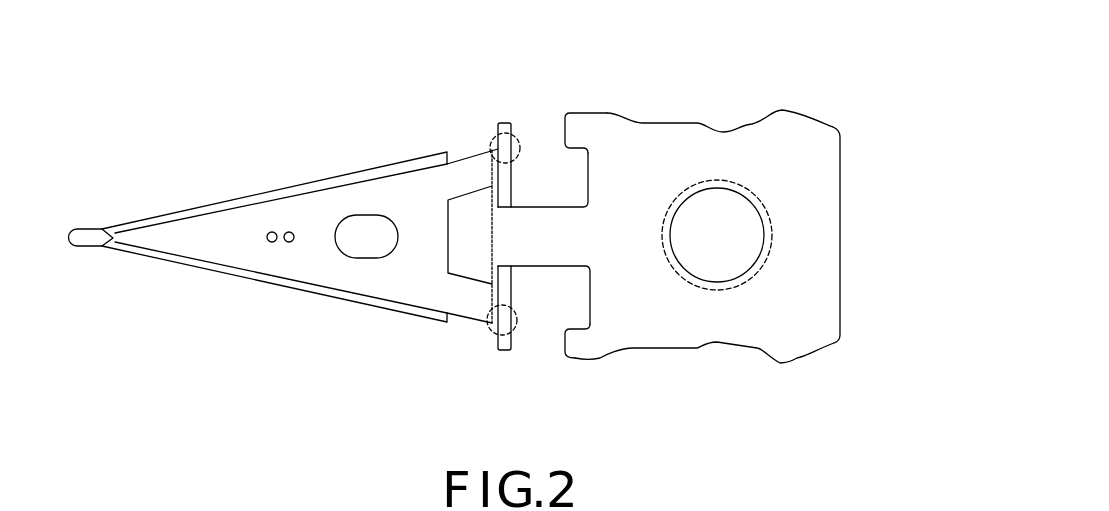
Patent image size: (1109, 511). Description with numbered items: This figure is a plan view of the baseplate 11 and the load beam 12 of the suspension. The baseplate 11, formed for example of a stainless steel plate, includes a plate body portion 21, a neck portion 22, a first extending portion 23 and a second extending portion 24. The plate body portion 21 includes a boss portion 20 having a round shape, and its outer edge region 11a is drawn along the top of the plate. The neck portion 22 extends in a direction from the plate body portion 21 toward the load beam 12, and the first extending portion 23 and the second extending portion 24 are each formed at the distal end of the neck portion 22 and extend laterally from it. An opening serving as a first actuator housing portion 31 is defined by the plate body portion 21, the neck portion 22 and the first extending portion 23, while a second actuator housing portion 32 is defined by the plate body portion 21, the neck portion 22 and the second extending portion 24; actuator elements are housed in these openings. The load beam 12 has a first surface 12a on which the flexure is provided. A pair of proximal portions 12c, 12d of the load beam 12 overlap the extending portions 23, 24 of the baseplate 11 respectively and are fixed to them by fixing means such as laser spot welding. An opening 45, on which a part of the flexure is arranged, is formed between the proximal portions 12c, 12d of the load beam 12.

The baseplate 11 is at (783, 330).
The upper edge portion of base body 11a is at (682, 152).
The load beam 12 is at (281, 267).
The first surface 12a is at (353, 192).
The proximal portion 12c is at (503, 307).
The proximal portion 12d is at (503, 162).
The boss portion 20 is at (718, 292).
The plate body portion 21 is at (630, 330).
The neck portion 22 is at (551, 213).
The first extending portion 23 is at (488, 307).
The second extending portion 24 is at (489, 152).
The first actuator housing portion 31 is at (545, 337).
The second actuator housing portion 32 is at (547, 138).
The opening 45 is at (497, 247).